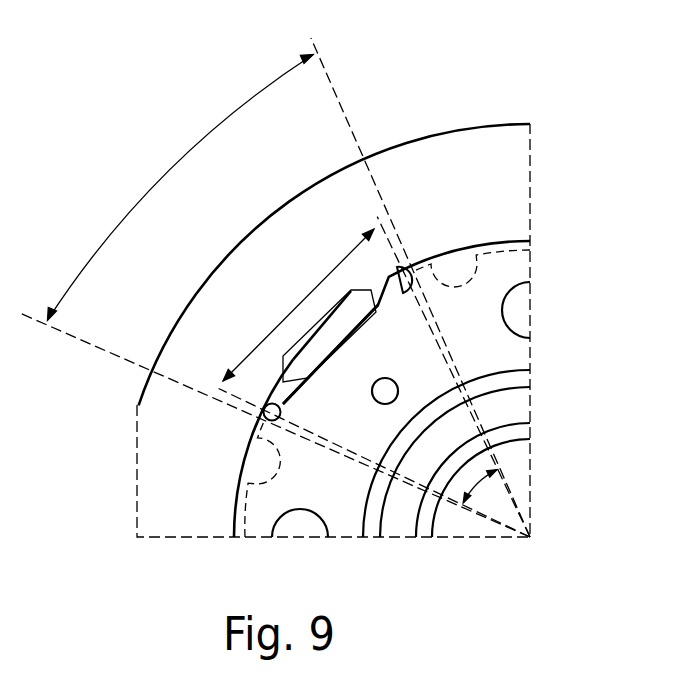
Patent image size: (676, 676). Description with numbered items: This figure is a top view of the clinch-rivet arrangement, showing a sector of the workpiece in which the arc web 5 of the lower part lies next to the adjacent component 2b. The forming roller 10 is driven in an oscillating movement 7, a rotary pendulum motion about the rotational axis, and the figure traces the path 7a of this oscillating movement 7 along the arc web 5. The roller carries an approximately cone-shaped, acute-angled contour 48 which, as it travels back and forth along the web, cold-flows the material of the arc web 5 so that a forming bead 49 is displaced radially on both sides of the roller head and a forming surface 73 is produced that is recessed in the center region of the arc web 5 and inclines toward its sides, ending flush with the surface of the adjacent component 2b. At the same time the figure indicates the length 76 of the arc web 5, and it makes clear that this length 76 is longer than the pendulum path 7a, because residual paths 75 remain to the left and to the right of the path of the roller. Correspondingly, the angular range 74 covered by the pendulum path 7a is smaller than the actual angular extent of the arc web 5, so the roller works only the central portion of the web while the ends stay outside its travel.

The adjacent component 2b is at (488, 167).
The arc web 5 is at (279, 412).
The oscillating movement 7 is at (273, 302).
The path 7a is at (298, 291).
The forming roller 10 is at (370, 288).
The contour 48 is at (288, 362).
The forming bead 49 is at (396, 189).
The forming surface 73 is at (392, 284).
The angular range 74 is at (475, 490).
The residual path 75 is at (403, 292).
The length 76 is at (165, 172).